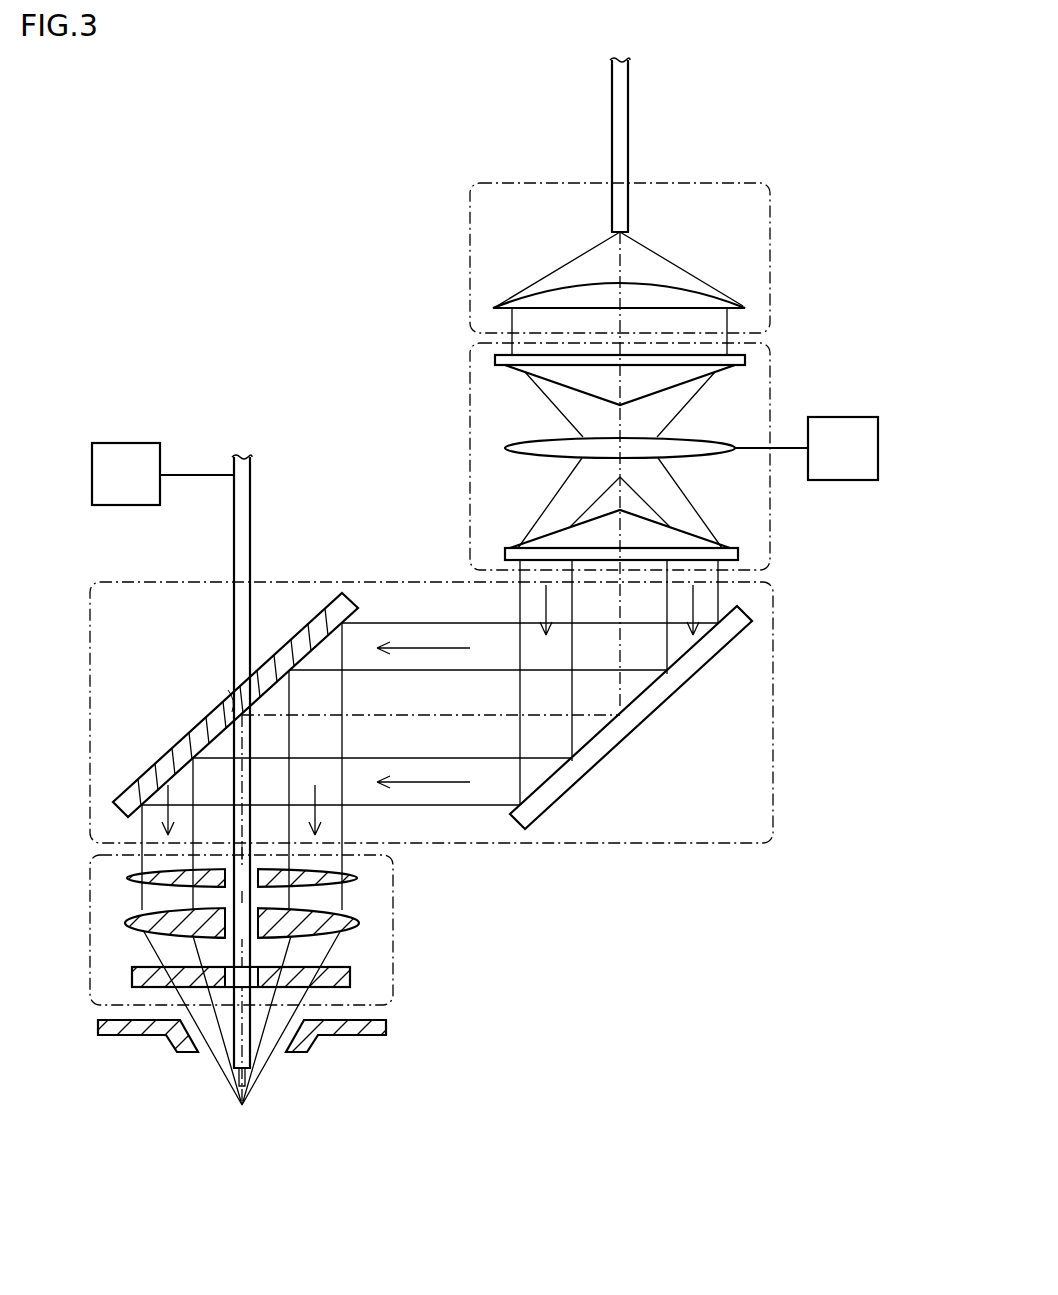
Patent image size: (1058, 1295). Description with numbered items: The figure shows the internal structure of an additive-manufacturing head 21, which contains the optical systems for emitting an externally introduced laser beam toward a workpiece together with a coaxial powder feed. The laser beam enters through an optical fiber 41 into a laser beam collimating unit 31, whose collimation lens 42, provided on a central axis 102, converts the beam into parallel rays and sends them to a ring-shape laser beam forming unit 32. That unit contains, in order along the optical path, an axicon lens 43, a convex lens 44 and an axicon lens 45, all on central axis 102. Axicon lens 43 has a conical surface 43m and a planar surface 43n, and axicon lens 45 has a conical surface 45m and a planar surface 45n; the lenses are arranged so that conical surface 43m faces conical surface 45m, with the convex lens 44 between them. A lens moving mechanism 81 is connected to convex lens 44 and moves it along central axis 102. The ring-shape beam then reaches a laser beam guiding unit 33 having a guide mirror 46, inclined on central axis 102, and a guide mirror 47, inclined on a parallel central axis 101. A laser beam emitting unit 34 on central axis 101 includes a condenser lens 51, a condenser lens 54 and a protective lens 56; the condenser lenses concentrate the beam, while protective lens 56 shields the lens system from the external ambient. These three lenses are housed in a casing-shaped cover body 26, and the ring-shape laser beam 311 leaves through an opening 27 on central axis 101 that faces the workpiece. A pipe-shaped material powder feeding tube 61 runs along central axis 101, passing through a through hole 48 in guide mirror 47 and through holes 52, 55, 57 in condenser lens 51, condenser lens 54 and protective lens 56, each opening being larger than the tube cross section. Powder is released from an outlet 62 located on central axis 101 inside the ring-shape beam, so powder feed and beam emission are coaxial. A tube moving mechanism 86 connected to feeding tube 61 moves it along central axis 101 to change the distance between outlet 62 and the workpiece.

The additive-manufacturing head 21 is at (118, 148).
The cover body 26 is at (386, 1028).
The opening 27 is at (282, 1050).
The laser beam collimating unit 31 is at (468, 213).
The ring-shape laser beam forming unit 32 is at (772, 378).
The laser beam guiding unit 33 is at (690, 845).
The laser beam emitting unit 34 is at (395, 893).
The optical fiber 41 is at (612, 110).
The collimation lens 42 is at (745, 301).
The axicon lens 43 is at (495, 360).
The one surface of axicon lens 43 43m is at (508, 372).
The other surface of axicon lens 43 43n is at (500, 351).
The convex lens 44 is at (505, 448).
The axicon lens 45 is at (740, 553).
The one surface of axicon lens 45 45m is at (735, 527).
The other surface of axicon lens 45 45n is at (740, 565).
The guide mirror 46 is at (722, 665).
The guide mirror 47 is at (318, 612).
The through hole 48 is at (232, 700).
The condenser lens 51 is at (127, 878).
The through hole 52 is at (262, 862).
The condenser lens 54 is at (125, 923).
The through hole 55 is at (233, 938).
The protective lens 56 is at (350, 976).
The through hole 57 is at (262, 993).
The material powder feeding tube 61 is at (234, 505).
The outlet 62 is at (247, 1088).
The lens moving mechanism 81 is at (880, 448).
The tube moving mechanism 86 is at (90, 477).
The central axis 101 is at (233, 852).
The central axis 102 is at (610, 503).
The ring-shape laser beam 311 is at (217, 1067).